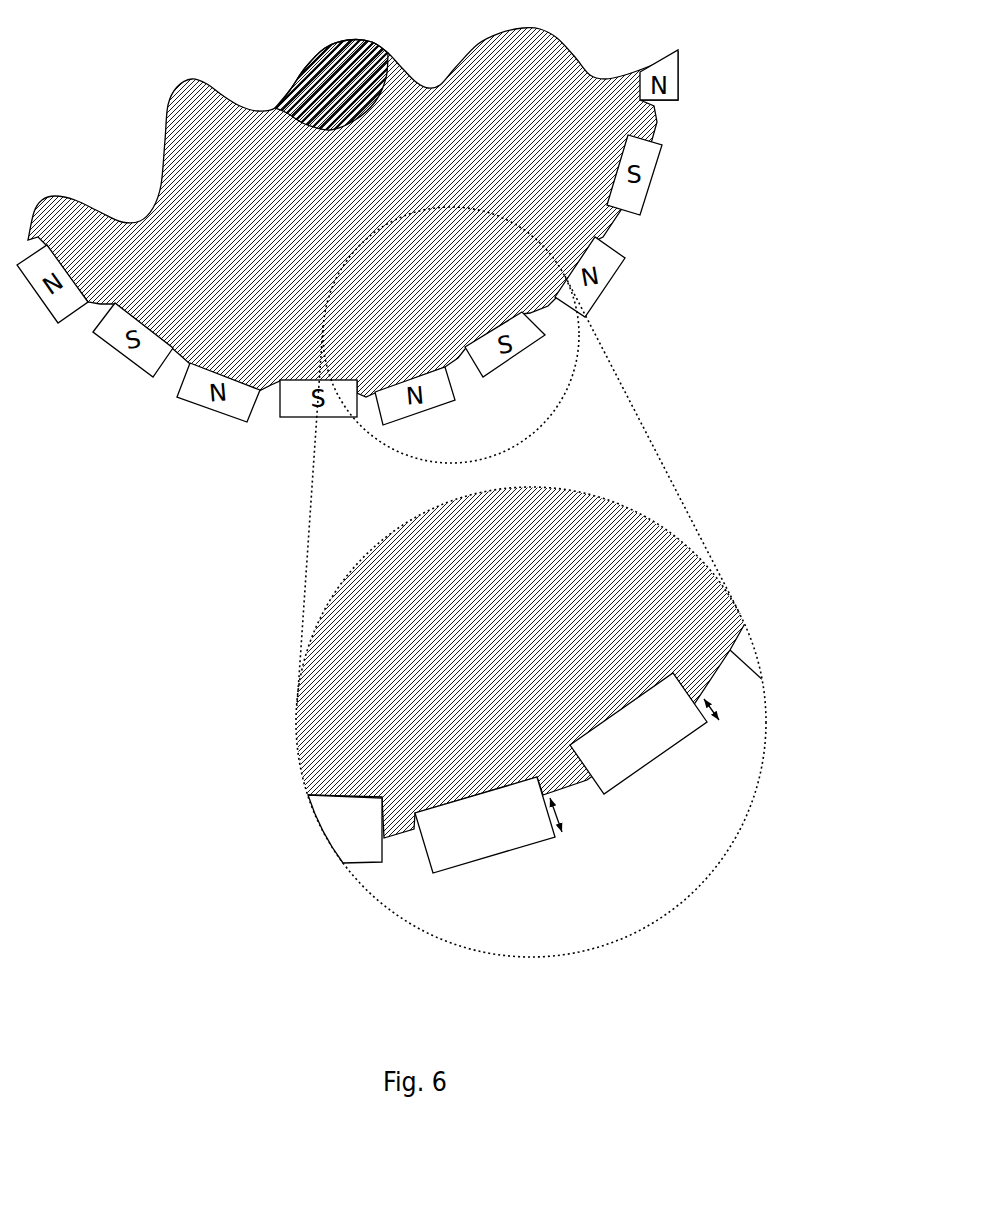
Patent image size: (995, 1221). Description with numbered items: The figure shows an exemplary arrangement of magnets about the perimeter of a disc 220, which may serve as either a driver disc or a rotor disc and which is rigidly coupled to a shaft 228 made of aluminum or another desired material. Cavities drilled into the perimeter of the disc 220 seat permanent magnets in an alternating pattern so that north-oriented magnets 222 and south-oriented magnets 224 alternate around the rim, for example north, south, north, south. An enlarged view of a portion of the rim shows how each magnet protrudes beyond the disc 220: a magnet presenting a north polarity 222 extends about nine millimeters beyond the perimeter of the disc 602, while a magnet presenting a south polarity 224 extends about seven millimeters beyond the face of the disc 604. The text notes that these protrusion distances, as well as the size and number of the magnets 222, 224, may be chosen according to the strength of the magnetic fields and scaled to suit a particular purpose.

The disc 220 is at (163, 184).
The shaft 228 is at (342, 70).
The north-oriented magnets 222 is at (513, 853).
The south-oriented magnets 224 is at (677, 748).
The extension of north-polarity magnet beyond the perimeter of the disc 602 is at (566, 810).
The extension of south-polarity magnet beyond the face of the disc 604 is at (724, 708).